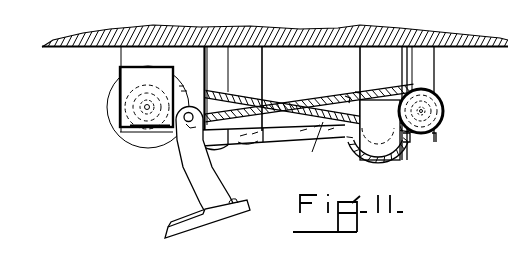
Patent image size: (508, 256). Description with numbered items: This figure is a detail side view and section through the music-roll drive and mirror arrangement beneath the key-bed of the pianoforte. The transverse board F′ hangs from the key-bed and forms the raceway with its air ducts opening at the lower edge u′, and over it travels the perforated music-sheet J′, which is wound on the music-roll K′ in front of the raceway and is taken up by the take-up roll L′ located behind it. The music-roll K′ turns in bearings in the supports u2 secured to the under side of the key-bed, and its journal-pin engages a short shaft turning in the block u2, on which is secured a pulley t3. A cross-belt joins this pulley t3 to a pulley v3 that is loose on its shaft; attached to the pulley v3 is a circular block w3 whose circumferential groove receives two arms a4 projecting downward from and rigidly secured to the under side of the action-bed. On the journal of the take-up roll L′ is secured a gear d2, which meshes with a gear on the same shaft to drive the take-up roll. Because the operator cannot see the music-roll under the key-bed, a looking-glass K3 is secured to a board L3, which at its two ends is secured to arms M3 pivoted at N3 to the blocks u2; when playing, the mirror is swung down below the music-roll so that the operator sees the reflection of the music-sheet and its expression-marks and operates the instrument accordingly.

The support u2 is at (147, 107).
The music-roll K′ is at (108, 119).
The pulley t3 is at (136, 131).
The pivot N3 is at (191, 102).
The transverse board F′ is at (255, 78).
The take-up roll L′ is at (360, 91).
The lower edge u′ is at (252, 150).
The perforated music-sheet J′ is at (270, 144).
The circular block w3 is at (448, 111).
The arms M3 is at (192, 173).
The looking-glass K3 is at (195, 220).
The board L3 is at (217, 222).
The arms a4 is at (412, 63).
The pulley v3 is at (430, 104).
The gear d2 is at (413, 154).